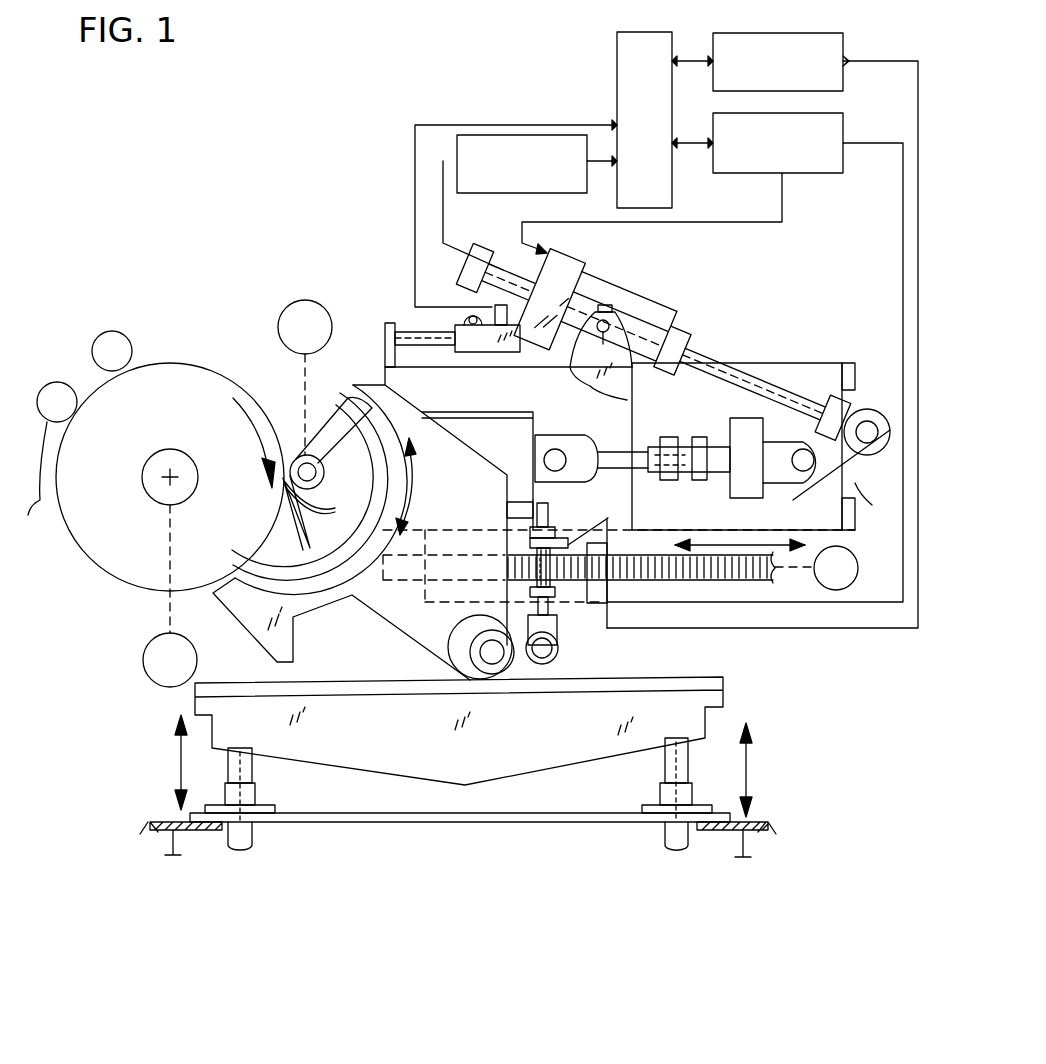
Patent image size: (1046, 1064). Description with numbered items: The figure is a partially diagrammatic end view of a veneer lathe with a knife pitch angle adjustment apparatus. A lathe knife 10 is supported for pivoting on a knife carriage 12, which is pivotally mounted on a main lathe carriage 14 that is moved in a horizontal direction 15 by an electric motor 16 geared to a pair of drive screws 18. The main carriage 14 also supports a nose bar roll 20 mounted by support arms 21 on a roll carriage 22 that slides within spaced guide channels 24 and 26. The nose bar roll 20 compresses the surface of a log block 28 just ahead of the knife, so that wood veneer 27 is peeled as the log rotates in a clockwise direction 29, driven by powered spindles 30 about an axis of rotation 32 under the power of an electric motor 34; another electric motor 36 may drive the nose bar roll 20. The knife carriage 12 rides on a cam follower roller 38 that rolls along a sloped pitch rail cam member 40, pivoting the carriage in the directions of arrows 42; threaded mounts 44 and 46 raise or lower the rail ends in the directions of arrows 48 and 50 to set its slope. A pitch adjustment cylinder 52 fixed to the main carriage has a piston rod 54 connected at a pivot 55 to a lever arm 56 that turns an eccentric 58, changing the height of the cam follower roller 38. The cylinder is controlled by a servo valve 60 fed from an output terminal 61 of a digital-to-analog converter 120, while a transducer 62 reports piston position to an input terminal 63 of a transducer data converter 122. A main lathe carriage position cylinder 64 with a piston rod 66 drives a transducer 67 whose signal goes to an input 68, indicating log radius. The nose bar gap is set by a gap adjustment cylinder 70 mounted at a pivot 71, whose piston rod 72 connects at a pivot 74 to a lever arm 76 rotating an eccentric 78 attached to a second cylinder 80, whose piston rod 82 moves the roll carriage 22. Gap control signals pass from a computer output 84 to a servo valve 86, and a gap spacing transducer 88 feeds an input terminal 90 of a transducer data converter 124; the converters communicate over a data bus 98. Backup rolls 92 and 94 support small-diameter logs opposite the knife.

The lathe knife 10 is at (282, 518).
The knife carriage 12 is at (455, 452).
The main lathe carriage 14 is at (628, 488).
The horizontal direction 15 is at (720, 540).
The electric motor 16 is at (856, 578).
The drive screws 18 is at (720, 570).
The nose bar roll 20 is at (362, 428).
The support arms 21 is at (322, 445).
The roll carriage 22 is at (520, 425).
The guide channel 24 is at (484, 412).
The guide channel 26 is at (518, 517).
The wood veneer 27 is at (322, 505).
The log block 28 is at (90, 563).
The clockwise direction 29 is at (258, 440).
The powered spindles 30 is at (170, 449).
The axis of rotation 32 is at (165, 478).
The electric motor 34 is at (145, 650).
The electric motor 36 is at (305, 300).
The cam follower roller 38 is at (448, 655).
The pitch rail cam member 40 is at (660, 677).
The arrows 42 is at (415, 480).
The threaded mount 44 is at (255, 793).
The threaded mount 46 is at (660, 793).
The arrow 48 is at (175, 735).
The arrow 50 is at (756, 770).
The pitch adjustment cylinder 52 is at (537, 568).
The piston rod 54 is at (555, 610).
The pivot 55 is at (552, 652).
The lever arm 56 is at (516, 660).
The eccentric 58 is at (470, 640).
The servo valve 60 is at (605, 540).
The output terminal 61 is at (895, 140).
The transducer 62 is at (548, 520).
The input terminal 63 is at (892, 55).
The main lathe carriage position cylinder 64 is at (470, 347).
The piston rod 66 is at (408, 330).
The transducer 67 is at (478, 292).
The input 68 is at (415, 228).
The gap adjustment cylinder 70 is at (650, 330).
The pivot 71 is at (601, 352).
The piston rod 72 is at (735, 380).
The pivot 74 is at (870, 425).
The lever arm 76 is at (872, 502).
The eccentric 78 is at (783, 495).
The second cylinder 80 is at (682, 445).
The piston rod 82 is at (636, 455).
The computer output 84 is at (680, 225).
The servo valve 86 is at (580, 247).
The gap spacing transducer 88 is at (512, 262).
The input terminal 90 is at (443, 192).
The backup roll 92 is at (92, 346).
The backup roll 94 is at (47, 462).
The data bus 98 is at (617, 92).
The digital-to-analog converter 120 is at (766, 173).
The transducer data converter 122 is at (742, 33).
The transducer data converter 124 is at (457, 142).